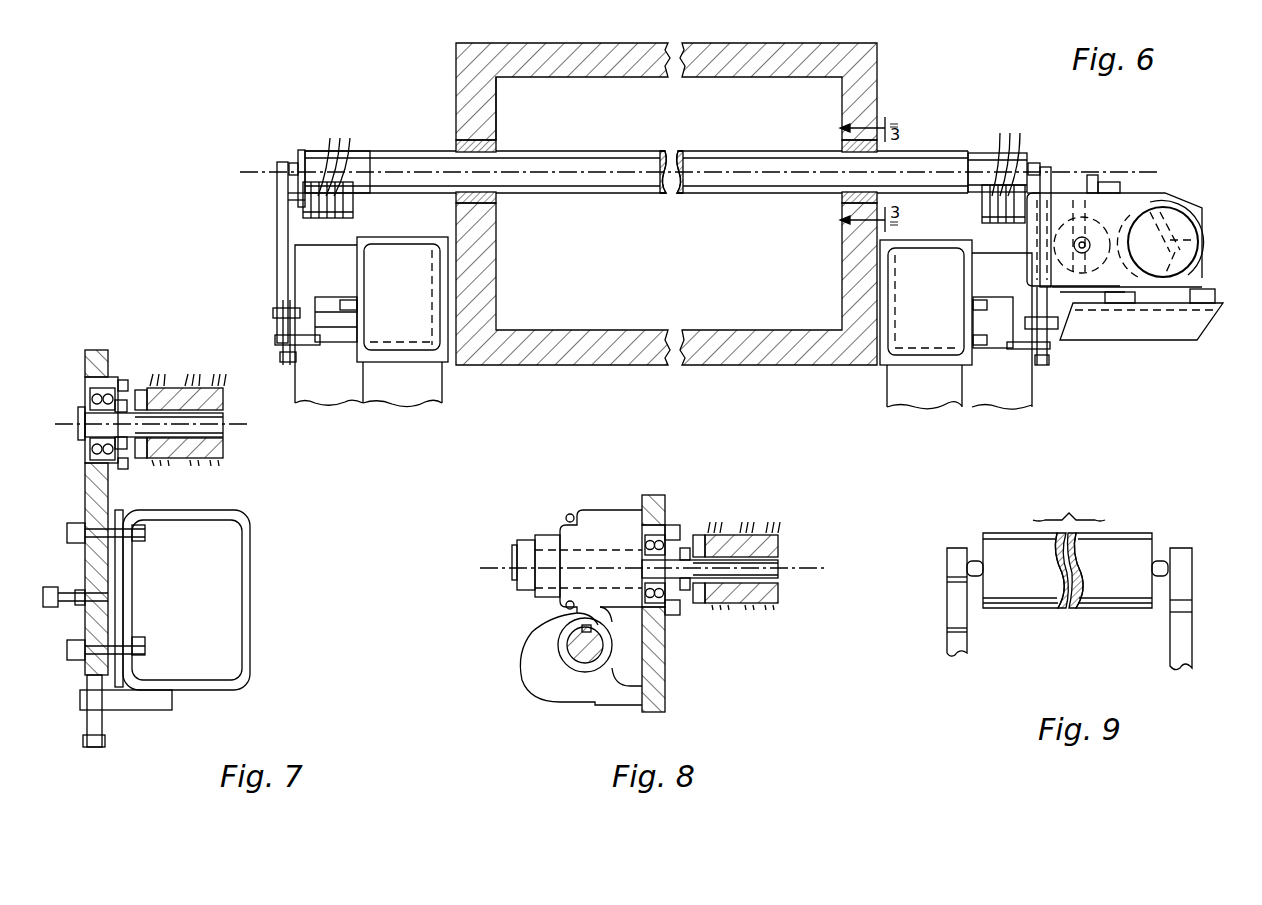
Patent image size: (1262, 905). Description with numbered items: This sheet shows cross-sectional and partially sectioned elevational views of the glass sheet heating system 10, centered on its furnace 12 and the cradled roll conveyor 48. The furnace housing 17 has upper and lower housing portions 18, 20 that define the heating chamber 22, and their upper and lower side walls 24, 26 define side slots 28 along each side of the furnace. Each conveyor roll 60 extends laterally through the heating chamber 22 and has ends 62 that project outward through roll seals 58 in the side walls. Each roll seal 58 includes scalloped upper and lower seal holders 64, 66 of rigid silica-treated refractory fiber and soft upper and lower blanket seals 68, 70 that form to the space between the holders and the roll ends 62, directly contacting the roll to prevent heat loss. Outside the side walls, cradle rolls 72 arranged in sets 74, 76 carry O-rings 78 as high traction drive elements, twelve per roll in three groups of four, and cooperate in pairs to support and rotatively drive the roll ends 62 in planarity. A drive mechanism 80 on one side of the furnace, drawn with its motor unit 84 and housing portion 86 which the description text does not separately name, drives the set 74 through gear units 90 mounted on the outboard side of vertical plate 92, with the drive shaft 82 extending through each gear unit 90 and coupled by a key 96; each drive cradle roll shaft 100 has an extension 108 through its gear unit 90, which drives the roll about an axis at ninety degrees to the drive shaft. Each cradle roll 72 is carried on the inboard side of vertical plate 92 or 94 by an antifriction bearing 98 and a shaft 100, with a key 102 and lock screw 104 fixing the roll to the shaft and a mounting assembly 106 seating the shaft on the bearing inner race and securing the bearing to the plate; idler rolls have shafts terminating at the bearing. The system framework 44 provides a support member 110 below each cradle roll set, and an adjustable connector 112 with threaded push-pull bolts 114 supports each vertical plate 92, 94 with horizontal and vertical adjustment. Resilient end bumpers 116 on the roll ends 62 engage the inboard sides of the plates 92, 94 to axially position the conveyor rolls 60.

In FIG. 6, the glass sheet heating system 10 is at (937, 72).
In FIG. 6, the furnace 12 is at (716, 372).
In FIG. 6, the housing 17 is at (453, 52).
In FIG. 6, the upper housing portion 18 is at (540, 50).
In FIG. 6, the lower housing portion 20 is at (598, 358).
In FIG. 6, the heating chamber 22 is at (858, 72).
In FIG. 6, the upper side wall 24 is at (468, 78).
In FIG. 6, the lower side wall 26 is at (500, 284).
In FIG. 6, the side slot 28 is at (500, 155).
In FIG. 6, the system framework 44 is at (392, 410).
In FIG. 7, the system framework 44 is at (248, 514).
In FIG. 6, the cradled roll conveyor 48 is at (936, 112).
In FIG. 9, the cradled roll conveyor 48 is at (1120, 515).
In FIG. 6, the roll seal 58 is at (447, 131).
In FIG. 6, the conveyor roll 60 is at (660, 160).
In FIG. 9, the conveyor roll 60 is at (1075, 600).
In FIG. 6, the end 62 is at (372, 150).
In FIG. 9, the end 62 is at (996, 600).
In FIG. 6, the upper seal holder 64 is at (490, 142).
In FIG. 6, the lower seal holder 66 is at (497, 210).
In FIG. 6, the upper blanket seal 68 is at (456, 140).
In FIG. 6, the lower blanket seal 70 is at (508, 200).
In FIG. 6, the cradle roll 72 is at (354, 207).
In FIG. 7, the cradle roll 72 is at (224, 394).
In FIG. 8, the cradle roll 72 is at (780, 546).
In FIG. 6, the set of cradle rolls 74 is at (993, 229).
In FIG. 8, the set of cradle rolls 74 is at (786, 535).
In FIG. 6, the set of cradle rolls 76 is at (318, 226).
In FIG. 6, the O-ring 78 is at (666, 148).
In FIG. 7, the O-ring 78 is at (191, 409).
In FIG. 8, the O-ring 78 is at (745, 556).
In FIG. 6, the drive mechanism 80 is at (1186, 184).
In FIG. 8, the drive shaft 82 is at (585, 655).
In FIG. 6, the motor housing 84 is at (1207, 228).
In FIG. 6, the motor body 86 is at (1130, 195).
In FIG. 6, the gear unit 90 is at (1095, 190).
In FIG. 8, the gear unit 90 is at (600, 508).
In FIG. 6, the vertical plate 92 is at (1048, 180).
In FIG. 7, the vertical plate 92 is at (96, 352).
In FIG. 8, the vertical plate 92 is at (655, 494).
In FIG. 9, the vertical plate 92 is at (1180, 555).
In FIG. 6, the vertical plate 94 is at (280, 198).
In FIG. 9, the vertical plate 94 is at (955, 555).
In FIG. 8, the key 96 is at (583, 628).
In FIG. 7, the antifriction bearing 98 is at (92, 395).
In FIG. 8, the antifriction bearing 98 is at (652, 525).
In FIG. 7, the shaft 100 is at (212, 430).
In FIG. 8, the shaft 100 is at (708, 600).
In FIG. 7, the key 102 is at (160, 420).
In FIG. 8, the key 102 is at (728, 580).
In FIG. 7, the lock screw 104 is at (140, 390).
In FIG. 8, the lock screw 104 is at (698, 535).
In FIG. 7, the mounting assembly 106 is at (122, 463).
In FIG. 8, the mounting assembly 106 is at (678, 624).
In FIG. 8, the extension 108 is at (520, 548).
In FIG. 6, the support member 110 is at (322, 345).
In FIG. 7, the support member 110 is at (250, 660).
In FIG. 6, the adjustable connector 112 is at (270, 325).
In FIG. 7, the adjustable connector 112 is at (70, 686).
In FIG. 6, the push-pull bolt 114 is at (282, 300).
In FIG. 7, the push-pull bolt 114 is at (75, 522).
In FIG. 6, the end bumper 116 is at (295, 162).
In FIG. 9, the end bumper 116 is at (972, 558).